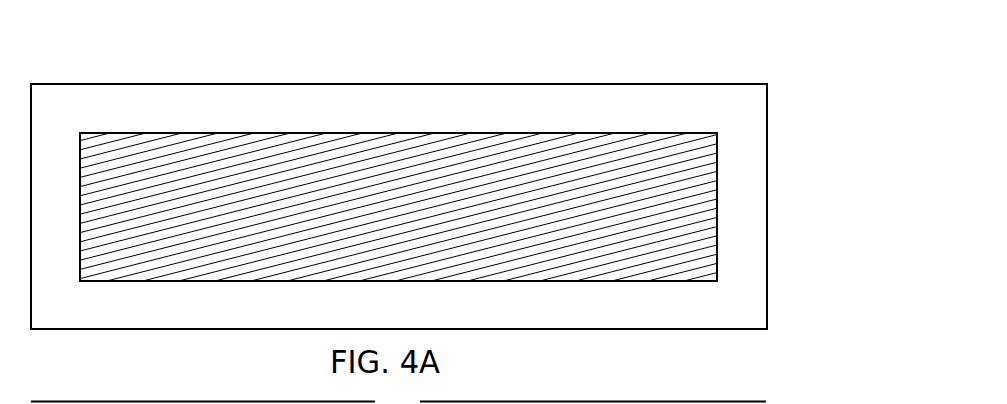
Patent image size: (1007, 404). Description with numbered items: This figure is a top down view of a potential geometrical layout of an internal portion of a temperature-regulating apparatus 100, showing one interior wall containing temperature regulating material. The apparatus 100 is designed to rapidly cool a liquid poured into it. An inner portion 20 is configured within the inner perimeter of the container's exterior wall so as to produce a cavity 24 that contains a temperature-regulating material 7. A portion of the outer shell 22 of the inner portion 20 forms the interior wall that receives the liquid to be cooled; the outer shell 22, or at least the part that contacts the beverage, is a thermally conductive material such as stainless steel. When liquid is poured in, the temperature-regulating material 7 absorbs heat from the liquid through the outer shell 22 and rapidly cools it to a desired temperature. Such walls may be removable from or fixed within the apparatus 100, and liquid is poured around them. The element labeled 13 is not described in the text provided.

The temperature-regulating apparatus 100 is at (439, 202).
The housing 13 is at (742, 142).
The inner portion 20 is at (455, 257).
The temperature-regulating material 7 is at (687, 212).
The cavity 24 is at (687, 260).
The outer shell 22 is at (693, 278).